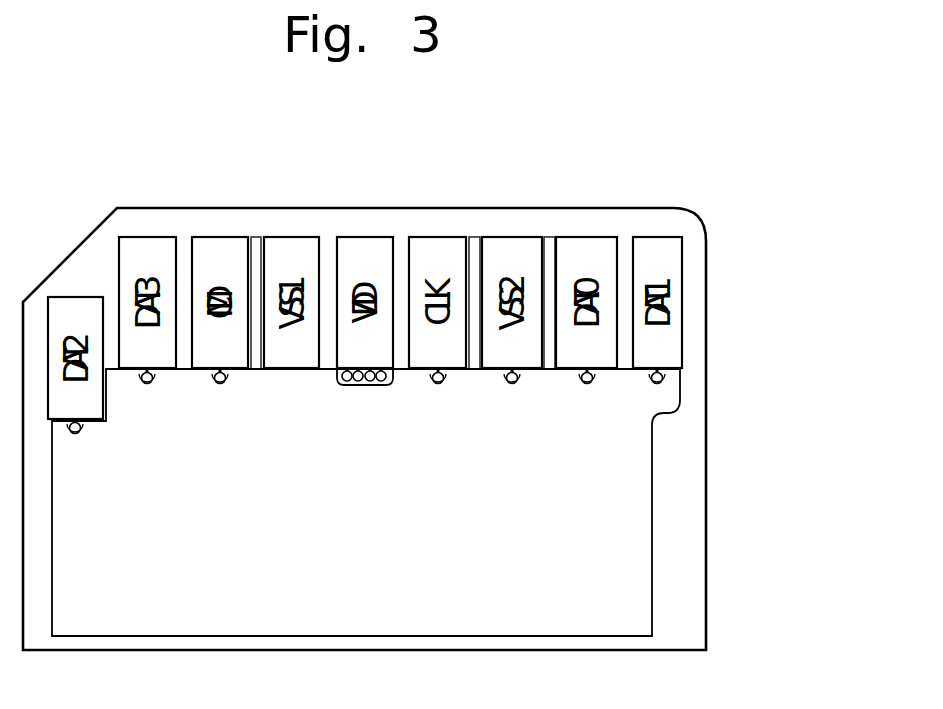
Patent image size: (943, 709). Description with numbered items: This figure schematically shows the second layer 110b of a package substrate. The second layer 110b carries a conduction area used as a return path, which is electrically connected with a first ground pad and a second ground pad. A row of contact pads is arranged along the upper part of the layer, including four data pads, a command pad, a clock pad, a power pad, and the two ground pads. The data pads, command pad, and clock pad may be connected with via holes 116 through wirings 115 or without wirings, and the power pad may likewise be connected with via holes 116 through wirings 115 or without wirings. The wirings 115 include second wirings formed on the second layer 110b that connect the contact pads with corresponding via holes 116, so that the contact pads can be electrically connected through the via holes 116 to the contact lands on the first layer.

The second layer 110b is at (695, 163).
The wirings 115 is at (658, 369).
The via holes 116 is at (665, 380).